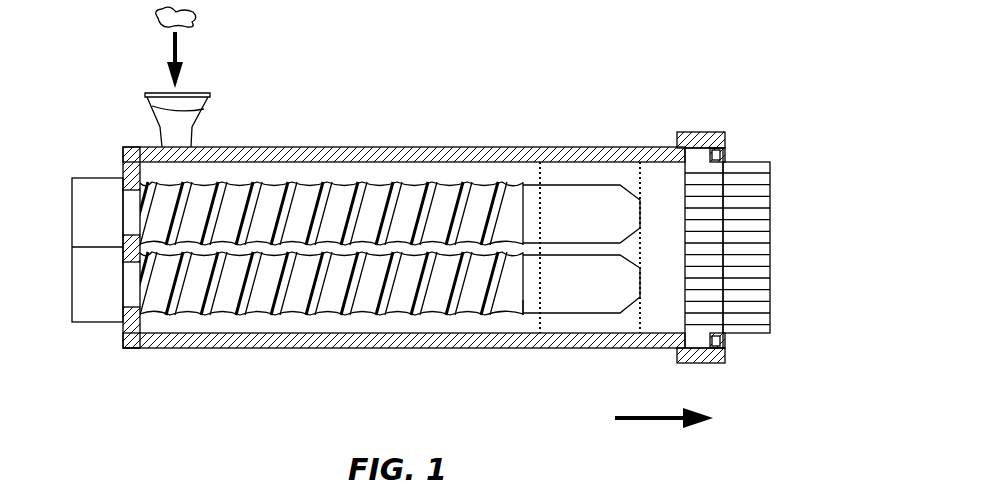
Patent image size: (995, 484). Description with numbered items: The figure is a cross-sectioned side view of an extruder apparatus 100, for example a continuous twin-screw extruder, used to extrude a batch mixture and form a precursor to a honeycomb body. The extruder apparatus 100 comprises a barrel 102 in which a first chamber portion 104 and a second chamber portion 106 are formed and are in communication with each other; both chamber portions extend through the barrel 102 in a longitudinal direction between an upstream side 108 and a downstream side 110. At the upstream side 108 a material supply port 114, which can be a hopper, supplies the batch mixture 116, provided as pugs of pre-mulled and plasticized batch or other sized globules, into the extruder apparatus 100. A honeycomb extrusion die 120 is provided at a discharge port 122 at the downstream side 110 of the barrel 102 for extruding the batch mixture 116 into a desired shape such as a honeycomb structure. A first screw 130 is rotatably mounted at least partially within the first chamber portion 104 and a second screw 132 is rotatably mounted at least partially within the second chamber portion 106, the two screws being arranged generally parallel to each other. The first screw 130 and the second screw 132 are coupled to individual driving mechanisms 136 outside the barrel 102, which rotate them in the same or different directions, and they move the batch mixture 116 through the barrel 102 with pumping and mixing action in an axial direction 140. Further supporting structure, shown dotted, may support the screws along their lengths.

The extruder apparatus 100 is at (435, 58).
The barrel 102 is at (212, 147).
The first chamber portion 104 is at (382, 170).
The second chamber portion 106 is at (315, 324).
The upstream side 108 is at (137, 372).
The downstream side 110 is at (665, 125).
The material supply port 114 is at (152, 118).
The batch mixture 116 is at (200, 20).
The honeycomb extrusion die 120 is at (716, 118).
The discharge port 122 is at (672, 180).
The first screw 130 is at (442, 162).
The second screw 132 is at (455, 336).
The driving mechanisms 136 is at (100, 178).
The axial direction 140 is at (663, 412).